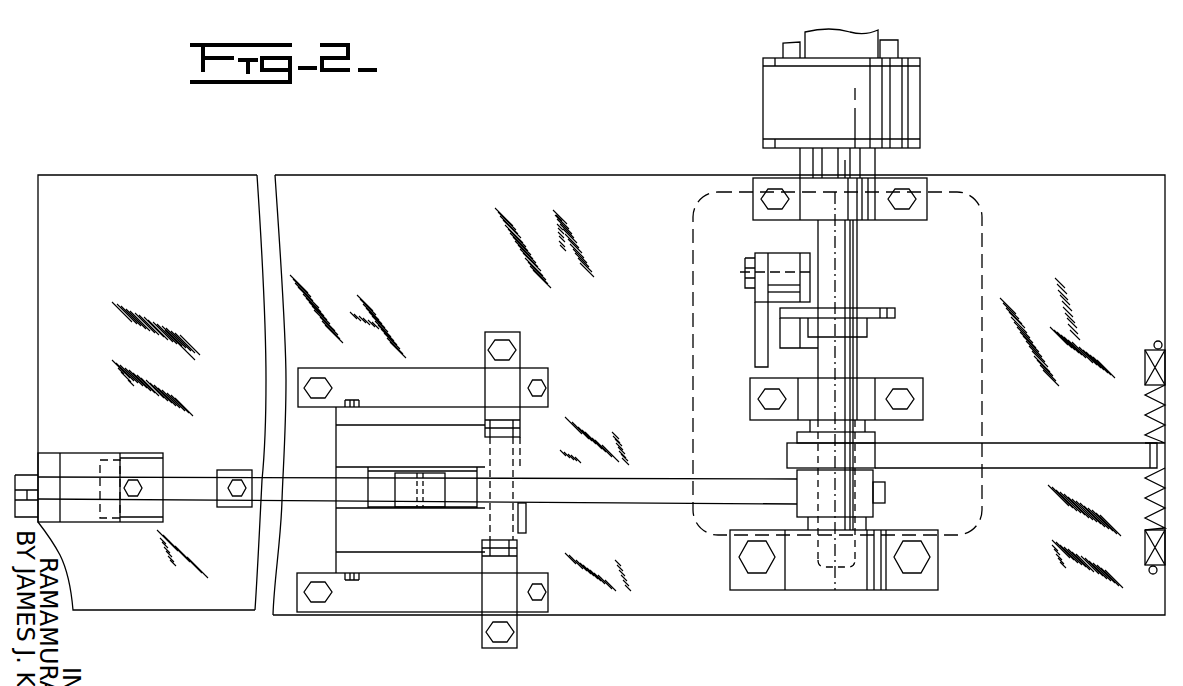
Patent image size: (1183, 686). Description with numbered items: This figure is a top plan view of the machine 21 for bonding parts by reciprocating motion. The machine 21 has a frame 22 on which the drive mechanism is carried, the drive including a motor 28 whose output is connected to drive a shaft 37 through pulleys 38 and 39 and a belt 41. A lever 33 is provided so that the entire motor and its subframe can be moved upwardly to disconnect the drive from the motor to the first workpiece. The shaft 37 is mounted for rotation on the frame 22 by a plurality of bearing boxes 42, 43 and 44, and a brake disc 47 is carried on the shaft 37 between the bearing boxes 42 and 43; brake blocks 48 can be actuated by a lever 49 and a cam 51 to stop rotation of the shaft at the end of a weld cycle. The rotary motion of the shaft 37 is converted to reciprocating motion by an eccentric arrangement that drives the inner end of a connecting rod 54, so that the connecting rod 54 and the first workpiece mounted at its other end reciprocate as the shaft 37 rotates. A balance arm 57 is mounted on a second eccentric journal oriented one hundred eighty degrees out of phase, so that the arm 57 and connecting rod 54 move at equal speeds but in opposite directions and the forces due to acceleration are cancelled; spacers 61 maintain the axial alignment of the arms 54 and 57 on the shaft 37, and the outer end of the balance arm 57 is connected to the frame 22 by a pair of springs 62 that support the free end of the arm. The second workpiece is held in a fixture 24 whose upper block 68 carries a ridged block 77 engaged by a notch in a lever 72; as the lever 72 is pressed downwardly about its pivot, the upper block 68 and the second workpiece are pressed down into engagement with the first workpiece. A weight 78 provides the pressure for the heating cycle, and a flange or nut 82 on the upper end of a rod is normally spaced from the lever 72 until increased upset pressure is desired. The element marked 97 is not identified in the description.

The machine 21 is at (700, 120).
The frame 22 is at (1034, 604).
The fixture 24 is at (540, 517).
The motor 28 is at (982, 252).
The lever 33 is at (856, 40).
The shaft 37 is at (848, 361).
The pulley 38 is at (766, 60).
The pulley 39 is at (796, 145).
The belt 41 is at (814, 112).
The bearing box 42 is at (816, 210).
The bearing box 43 is at (812, 380).
The bearing box 44 is at (803, 578).
The brake disc 47 is at (860, 312).
The brake blocks 48 is at (780, 320).
The lever 49 is at (758, 350).
The cam 51 is at (781, 258).
The connecting rod 54 is at (886, 493).
The balance arm 57 is at (790, 455).
The spacers 61 is at (875, 439).
The springs 62 is at (1145, 407).
The upper block 68 is at (350, 558).
The lever 72 is at (292, 488).
The ridged block 77 is at (420, 507).
The weight 78 is at (238, 507).
The flange or nut 82 is at (135, 479).
The end block 97 is at (152, 522).